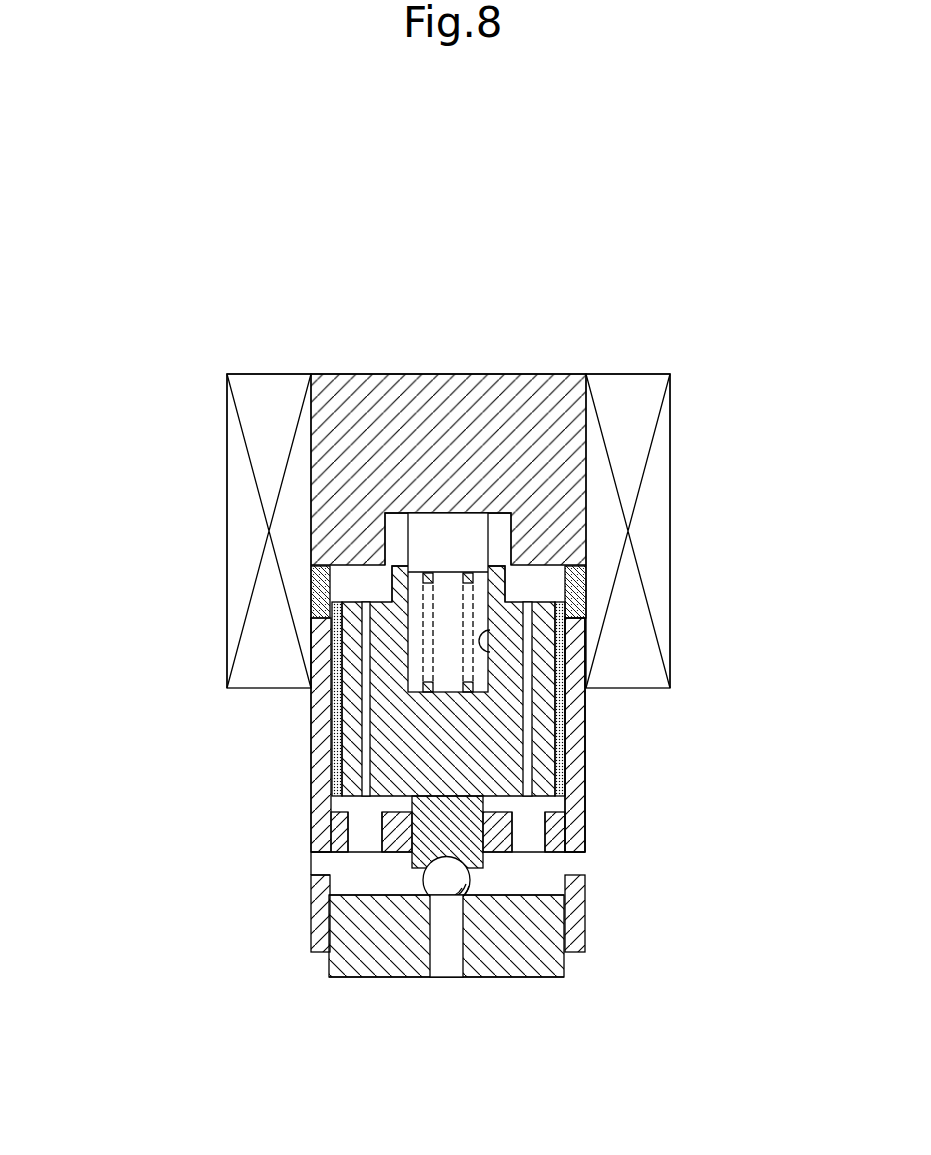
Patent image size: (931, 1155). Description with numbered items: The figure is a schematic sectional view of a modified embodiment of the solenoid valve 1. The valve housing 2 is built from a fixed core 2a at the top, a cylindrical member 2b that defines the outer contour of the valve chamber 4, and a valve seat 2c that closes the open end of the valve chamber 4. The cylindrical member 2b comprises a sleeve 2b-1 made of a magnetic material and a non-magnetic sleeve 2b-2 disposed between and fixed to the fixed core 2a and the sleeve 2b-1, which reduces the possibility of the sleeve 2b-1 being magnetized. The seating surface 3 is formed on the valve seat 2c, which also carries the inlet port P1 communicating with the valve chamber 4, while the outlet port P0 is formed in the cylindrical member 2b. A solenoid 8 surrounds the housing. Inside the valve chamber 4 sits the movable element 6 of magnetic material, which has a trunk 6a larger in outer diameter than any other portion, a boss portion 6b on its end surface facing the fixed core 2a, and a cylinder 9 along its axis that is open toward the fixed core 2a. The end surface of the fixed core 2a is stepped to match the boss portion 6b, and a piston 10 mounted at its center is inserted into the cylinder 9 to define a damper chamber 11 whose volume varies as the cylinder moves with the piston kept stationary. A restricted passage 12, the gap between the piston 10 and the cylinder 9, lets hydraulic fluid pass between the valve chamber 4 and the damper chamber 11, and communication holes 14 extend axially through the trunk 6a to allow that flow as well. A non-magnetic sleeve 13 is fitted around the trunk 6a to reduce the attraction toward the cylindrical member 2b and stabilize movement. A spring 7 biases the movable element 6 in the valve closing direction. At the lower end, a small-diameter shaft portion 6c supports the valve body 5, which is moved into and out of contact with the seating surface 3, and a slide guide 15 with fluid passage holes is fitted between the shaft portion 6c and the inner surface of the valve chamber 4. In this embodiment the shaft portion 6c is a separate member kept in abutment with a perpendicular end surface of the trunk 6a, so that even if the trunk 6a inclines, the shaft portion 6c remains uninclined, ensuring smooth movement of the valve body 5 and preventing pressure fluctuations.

The solenoid valve 1 is at (697, 370).
The valve housing 2 is at (308, 837).
The fixed core 2a is at (533, 383).
The cylindrical member 2b is at (92, 563).
The sleeve 2b-1 is at (317, 635).
The sleeve 2b-2 is at (312, 595).
The valve seat 2c is at (523, 948).
The seating surface 3 is at (467, 905).
The valve chamber 4 is at (350, 582).
The valve body 5 is at (433, 883).
The movable element 6 is at (385, 742).
The trunk 6a is at (542, 745).
The boss portion 6b is at (388, 562).
The shaft portion 6c is at (513, 838).
The spring 7 is at (489, 616).
The solenoid 8 is at (250, 358).
The cylinder 9 is at (490, 641).
The piston 10 is at (477, 525).
The damper chamber 11 is at (448, 668).
The restricted passage 12 is at (492, 572).
The non-magnetic sleeve 13 is at (568, 725).
The communication holes 14 is at (528, 780).
The slide guide 15 is at (393, 842).
The outlet port P0 is at (318, 862).
The inlet port P1 is at (445, 963).